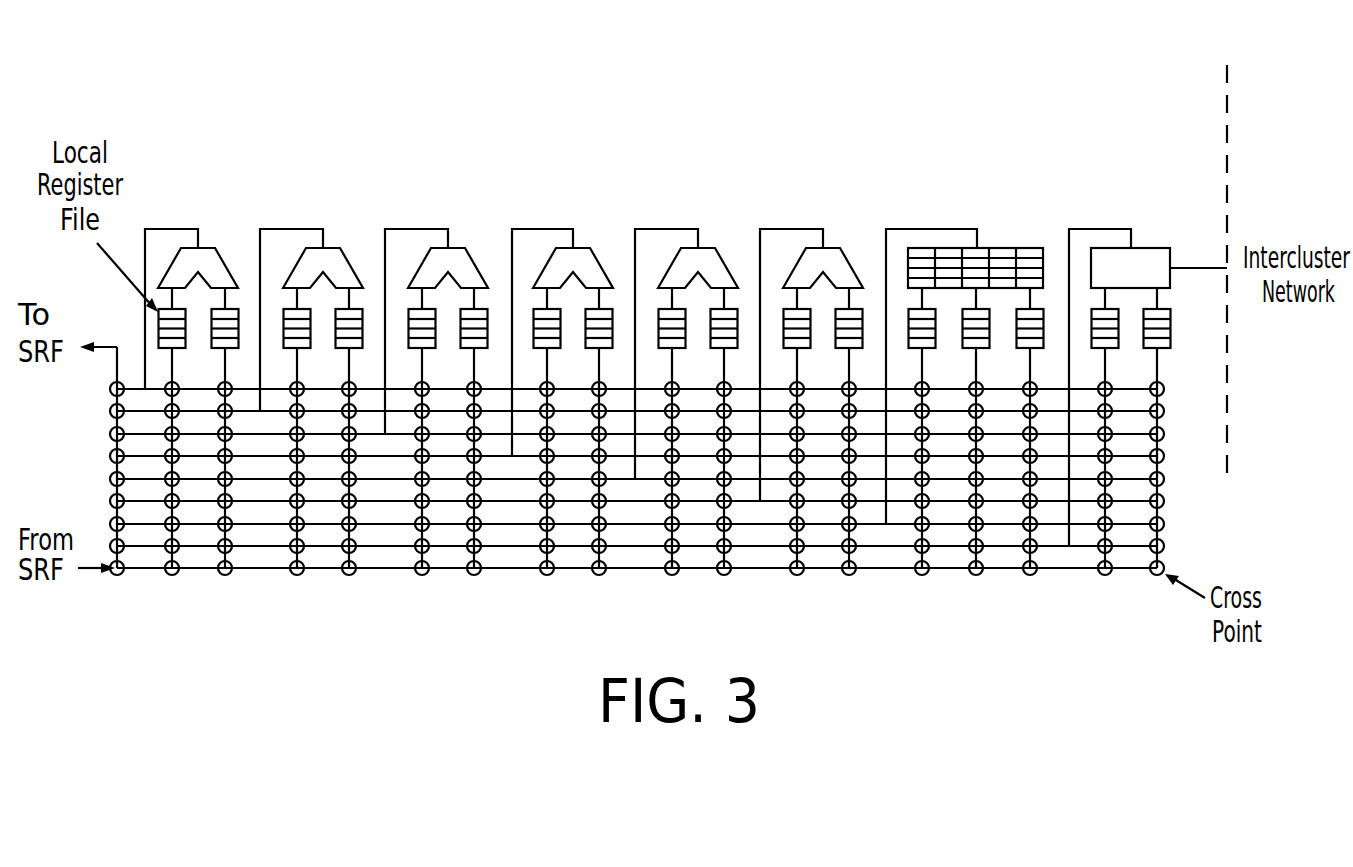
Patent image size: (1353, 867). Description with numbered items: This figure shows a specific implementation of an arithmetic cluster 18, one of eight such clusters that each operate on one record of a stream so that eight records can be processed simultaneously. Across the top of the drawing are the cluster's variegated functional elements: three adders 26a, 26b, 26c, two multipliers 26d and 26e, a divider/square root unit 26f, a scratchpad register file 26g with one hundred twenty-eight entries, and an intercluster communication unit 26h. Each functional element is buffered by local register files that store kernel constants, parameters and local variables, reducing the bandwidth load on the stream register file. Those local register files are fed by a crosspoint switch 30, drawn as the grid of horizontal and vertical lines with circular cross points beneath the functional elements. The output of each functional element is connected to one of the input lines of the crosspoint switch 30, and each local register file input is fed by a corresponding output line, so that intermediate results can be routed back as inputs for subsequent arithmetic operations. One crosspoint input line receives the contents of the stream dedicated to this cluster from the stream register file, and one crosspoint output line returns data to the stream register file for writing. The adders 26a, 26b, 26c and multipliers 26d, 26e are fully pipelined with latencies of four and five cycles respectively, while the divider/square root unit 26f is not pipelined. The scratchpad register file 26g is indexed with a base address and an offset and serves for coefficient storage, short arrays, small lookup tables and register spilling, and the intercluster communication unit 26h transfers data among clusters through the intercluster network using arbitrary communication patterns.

The arithmetic cluster 18 is at (51, 424).
The crosspoint switch 30 is at (101, 491).
The adder 26a is at (222, 250).
The adder 26b is at (347, 250).
The adder 26c is at (472, 250).
The multiplier 26d is at (597, 250).
The multiplier 26e is at (722, 250).
The divider/square root unit 26f is at (847, 250).
The scratchpad register file 26g is at (1000, 248).
The intercluster communication unit 26h is at (1153, 248).